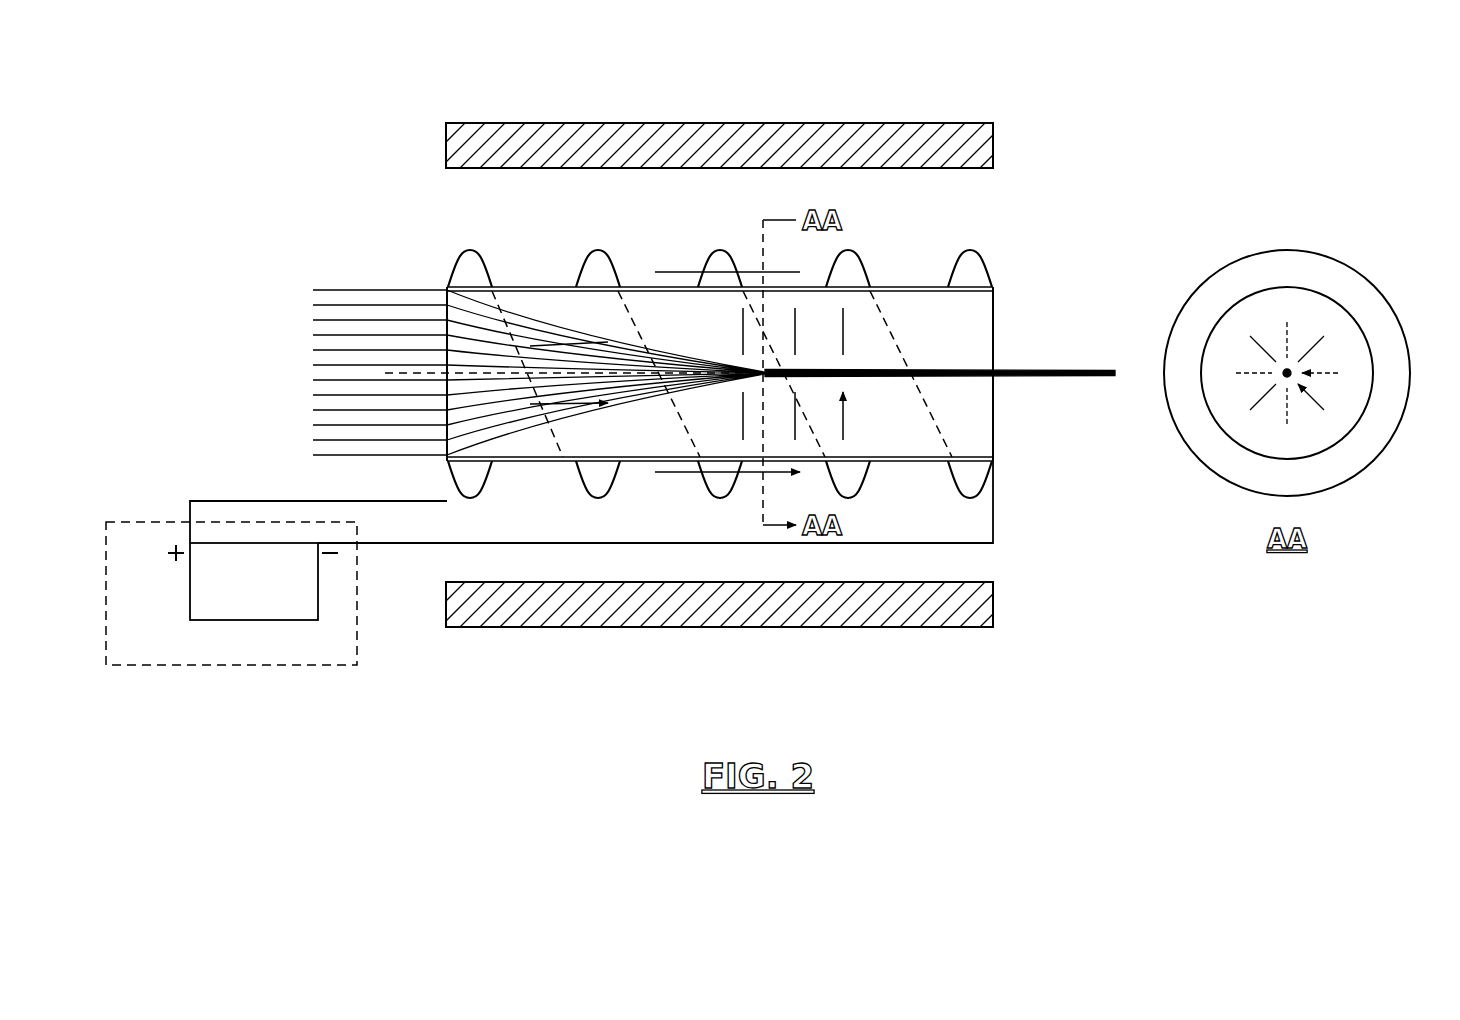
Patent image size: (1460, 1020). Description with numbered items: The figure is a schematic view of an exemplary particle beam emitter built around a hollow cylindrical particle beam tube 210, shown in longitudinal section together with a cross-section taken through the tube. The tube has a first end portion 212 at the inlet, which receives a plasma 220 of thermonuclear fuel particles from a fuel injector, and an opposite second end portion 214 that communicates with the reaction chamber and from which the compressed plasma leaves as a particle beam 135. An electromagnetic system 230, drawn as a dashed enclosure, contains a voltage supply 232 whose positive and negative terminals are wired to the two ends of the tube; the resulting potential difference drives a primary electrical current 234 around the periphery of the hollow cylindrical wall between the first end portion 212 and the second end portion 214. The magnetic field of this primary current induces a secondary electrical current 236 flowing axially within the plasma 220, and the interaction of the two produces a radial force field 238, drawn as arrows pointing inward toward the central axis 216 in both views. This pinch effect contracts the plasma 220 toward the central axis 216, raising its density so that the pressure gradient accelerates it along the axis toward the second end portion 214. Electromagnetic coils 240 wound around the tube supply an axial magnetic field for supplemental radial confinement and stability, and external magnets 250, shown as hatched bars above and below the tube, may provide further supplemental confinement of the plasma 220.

The particle beam 135 is at (1060, 368).
The particle beam tube 210 is at (895, 286).
The first end portion 212 is at (446, 425).
The second end portion 214 is at (995, 435).
The central axis 216 is at (385, 373).
The plasma 220 is at (380, 372).
The electromagnetic system 230 is at (231, 593).
The voltage supply 232 is at (580, 540).
The primary electrical current 234 is at (678, 271).
The secondary electrical current 236 is at (570, 343).
The radial force field 238 is at (855, 437).
The electromagnetic coils 240 is at (480, 258).
The external magnets 250 is at (925, 123).